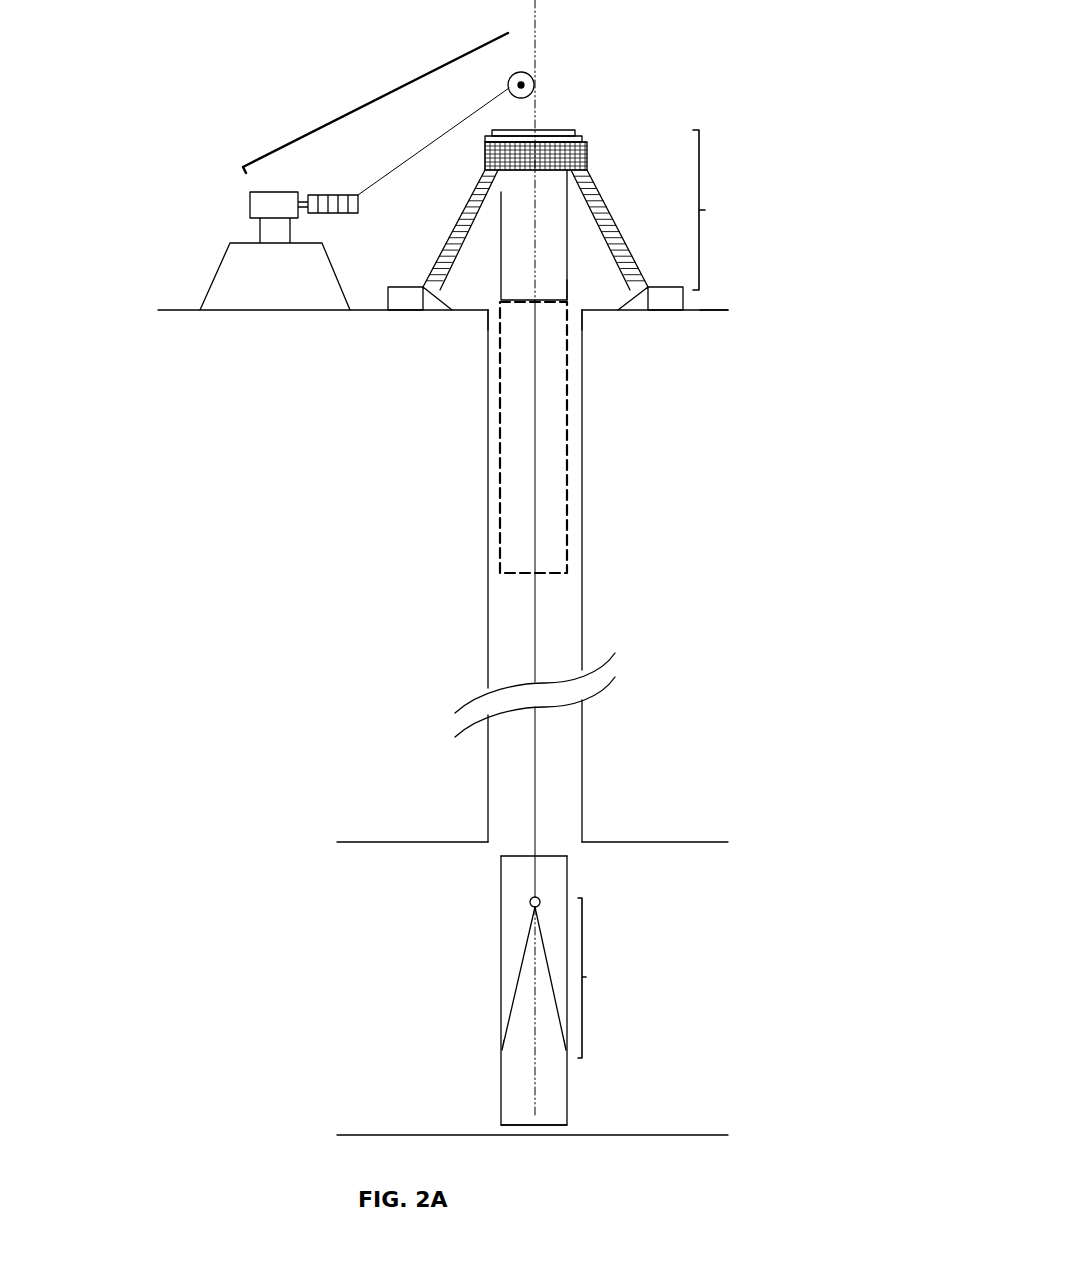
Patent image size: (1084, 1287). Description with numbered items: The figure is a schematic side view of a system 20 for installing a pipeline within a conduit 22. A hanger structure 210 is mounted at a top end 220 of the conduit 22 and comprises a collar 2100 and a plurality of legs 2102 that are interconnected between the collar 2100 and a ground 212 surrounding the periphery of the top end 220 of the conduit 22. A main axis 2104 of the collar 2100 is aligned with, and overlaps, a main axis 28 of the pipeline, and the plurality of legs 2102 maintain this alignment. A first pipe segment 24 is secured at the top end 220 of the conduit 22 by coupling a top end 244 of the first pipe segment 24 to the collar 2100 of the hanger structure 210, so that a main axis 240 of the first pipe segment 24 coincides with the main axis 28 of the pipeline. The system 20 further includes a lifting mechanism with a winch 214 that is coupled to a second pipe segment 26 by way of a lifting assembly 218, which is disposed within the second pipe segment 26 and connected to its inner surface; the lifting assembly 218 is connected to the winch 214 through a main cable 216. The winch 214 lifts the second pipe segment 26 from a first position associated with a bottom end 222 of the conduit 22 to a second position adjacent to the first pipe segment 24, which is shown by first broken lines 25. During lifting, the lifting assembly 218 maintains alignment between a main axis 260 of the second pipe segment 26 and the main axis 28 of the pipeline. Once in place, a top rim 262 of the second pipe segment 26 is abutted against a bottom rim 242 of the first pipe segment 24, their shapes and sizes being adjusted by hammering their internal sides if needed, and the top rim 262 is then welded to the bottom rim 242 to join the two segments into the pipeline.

The system 20 is at (131, 81).
The conduit 22 is at (488, 598).
The first pipe segment 24 is at (568, 228).
The first broken lines 25 is at (500, 430).
The second pipe segment 26 is at (500, 988).
The main axis of the pipeline 28 is at (535, 5).
The hanger structure 210 is at (732, 210).
The ground 212 is at (707, 310).
The winch 214 is at (375, 103).
The main cable 216 is at (535, 745).
The lifting assembly 218 is at (613, 978).
The top end of conduit 220 is at (488, 311).
The bottom end of conduit 222 is at (488, 845).
The main axis of first pipe segment 240 is at (533, 190).
The bottom rim of first pipe segment 242 is at (557, 297).
The top end of first pipe segment 244 is at (555, 128).
The main axis of second pipe segment 260 is at (535, 1102).
The top rim of second pipe segment 262 is at (535, 856).
The collar 2100 is at (582, 152).
The plurality of legs 2102 is at (592, 187).
The main axis of collar 2104 is at (536, 157).